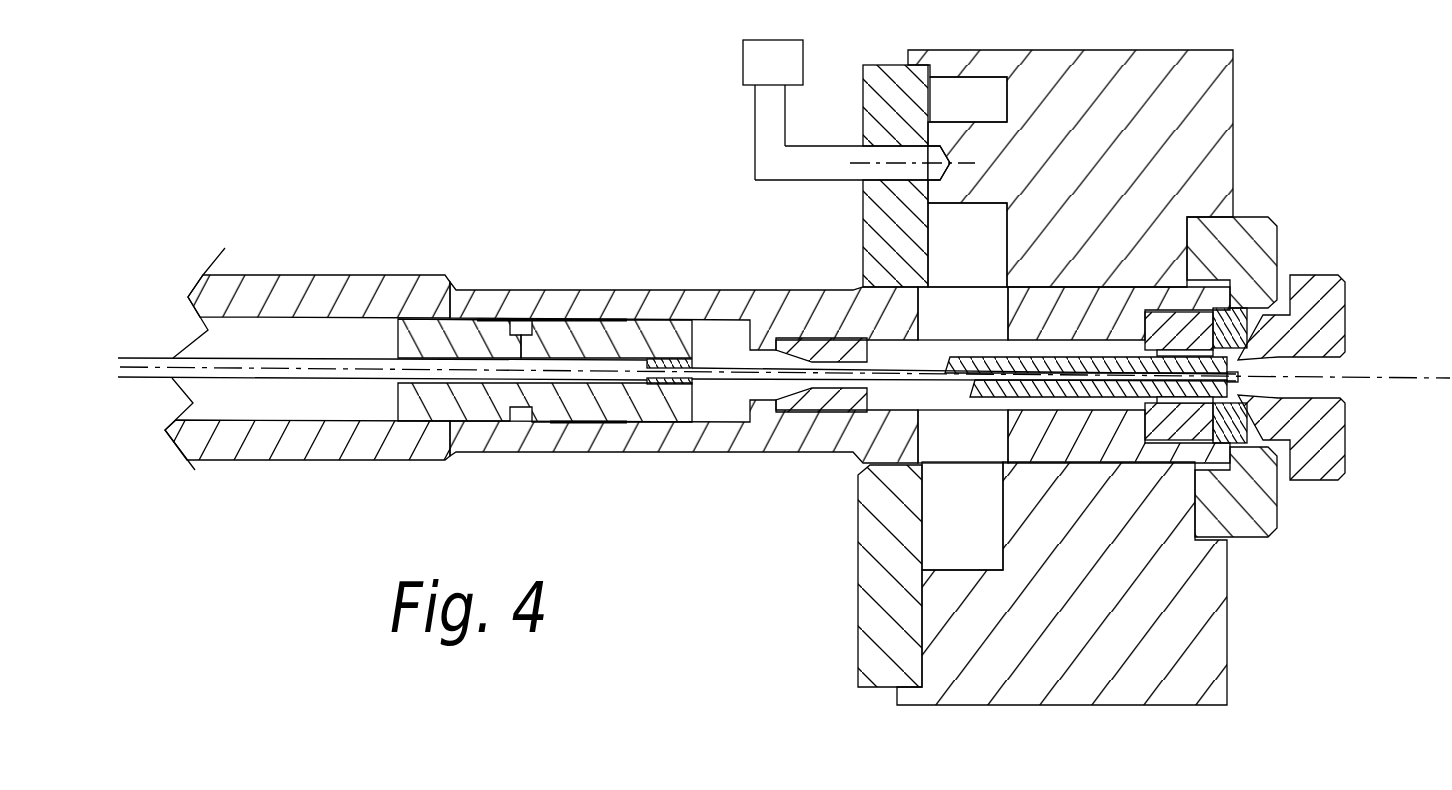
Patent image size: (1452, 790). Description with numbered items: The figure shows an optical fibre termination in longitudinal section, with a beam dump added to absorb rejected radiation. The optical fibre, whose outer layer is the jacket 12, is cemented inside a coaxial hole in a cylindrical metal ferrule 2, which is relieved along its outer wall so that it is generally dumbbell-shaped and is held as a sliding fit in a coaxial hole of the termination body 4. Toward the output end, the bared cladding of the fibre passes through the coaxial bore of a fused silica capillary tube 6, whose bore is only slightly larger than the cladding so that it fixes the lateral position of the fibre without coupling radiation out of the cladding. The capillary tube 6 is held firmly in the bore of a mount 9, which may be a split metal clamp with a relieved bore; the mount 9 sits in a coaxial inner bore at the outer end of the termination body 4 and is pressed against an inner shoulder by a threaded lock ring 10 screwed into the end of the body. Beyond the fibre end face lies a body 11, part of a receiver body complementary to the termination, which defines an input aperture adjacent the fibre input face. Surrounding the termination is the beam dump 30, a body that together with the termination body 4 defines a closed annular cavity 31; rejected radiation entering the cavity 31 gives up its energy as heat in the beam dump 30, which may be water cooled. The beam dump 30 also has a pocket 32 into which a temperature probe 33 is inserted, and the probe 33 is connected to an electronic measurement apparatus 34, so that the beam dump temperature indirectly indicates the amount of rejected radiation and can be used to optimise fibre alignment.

The cylindrical metal ferrule 2 is at (580, 403).
The termination body 4 is at (667, 290).
The fused silica capillary tube 6 is at (1068, 397).
The mount 9 is at (1212, 308).
The threaded lock ring 10 is at (1232, 430).
The body 11 is at (1316, 463).
The jacket 12 is at (960, 318).
The beam dump 30 is at (1130, 88).
The closed annular cavity 31 is at (983, 227).
The pocket 32 is at (890, 138).
The probe 33 is at (910, 157).
The electronic measurement apparatus 34 is at (743, 60).